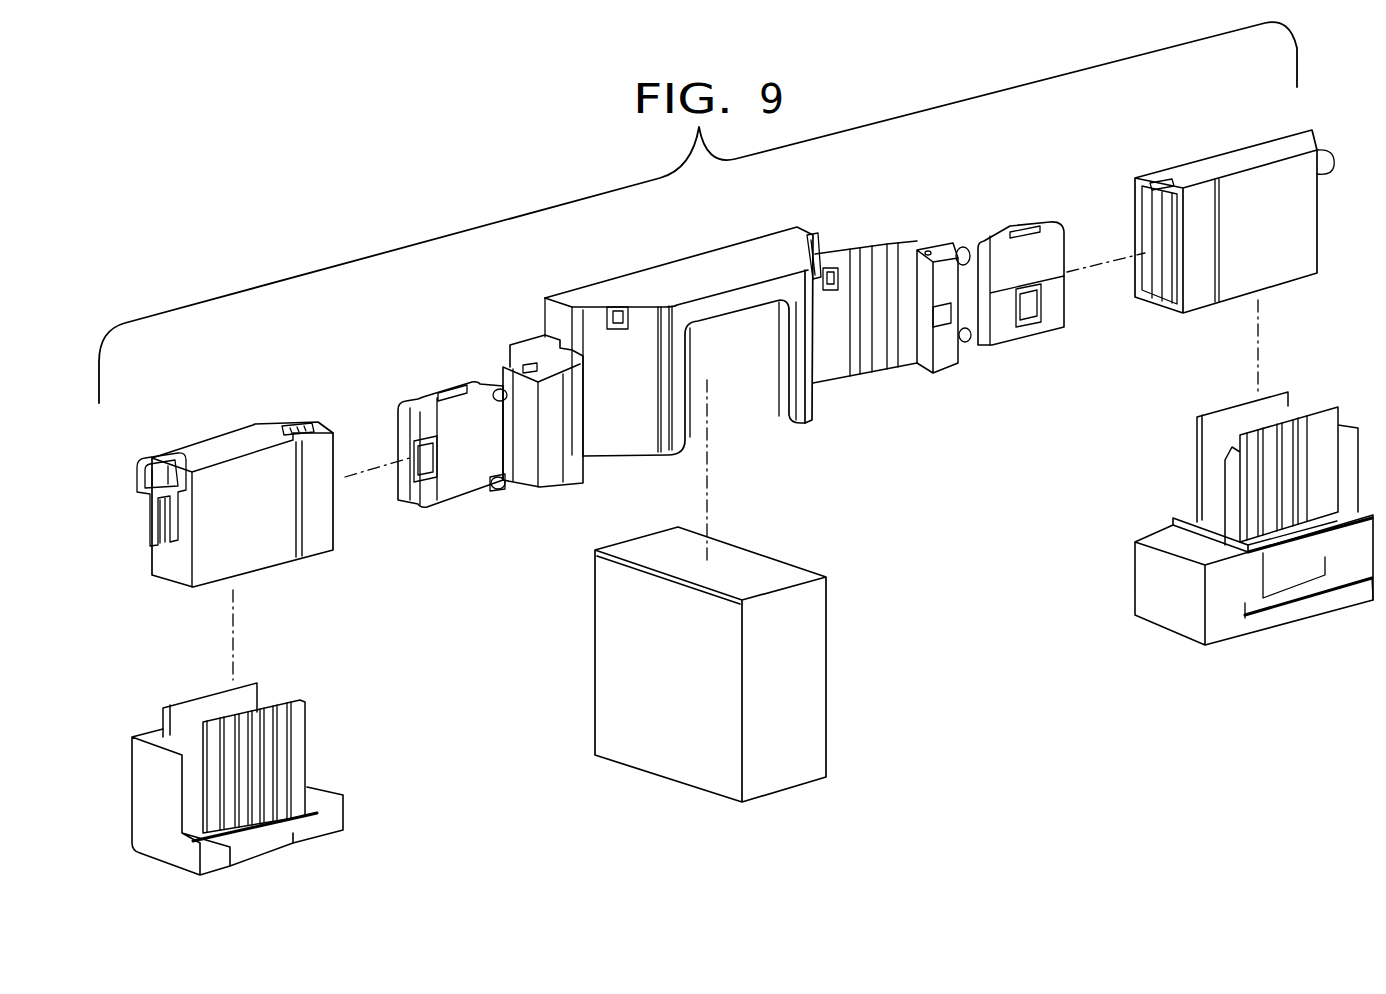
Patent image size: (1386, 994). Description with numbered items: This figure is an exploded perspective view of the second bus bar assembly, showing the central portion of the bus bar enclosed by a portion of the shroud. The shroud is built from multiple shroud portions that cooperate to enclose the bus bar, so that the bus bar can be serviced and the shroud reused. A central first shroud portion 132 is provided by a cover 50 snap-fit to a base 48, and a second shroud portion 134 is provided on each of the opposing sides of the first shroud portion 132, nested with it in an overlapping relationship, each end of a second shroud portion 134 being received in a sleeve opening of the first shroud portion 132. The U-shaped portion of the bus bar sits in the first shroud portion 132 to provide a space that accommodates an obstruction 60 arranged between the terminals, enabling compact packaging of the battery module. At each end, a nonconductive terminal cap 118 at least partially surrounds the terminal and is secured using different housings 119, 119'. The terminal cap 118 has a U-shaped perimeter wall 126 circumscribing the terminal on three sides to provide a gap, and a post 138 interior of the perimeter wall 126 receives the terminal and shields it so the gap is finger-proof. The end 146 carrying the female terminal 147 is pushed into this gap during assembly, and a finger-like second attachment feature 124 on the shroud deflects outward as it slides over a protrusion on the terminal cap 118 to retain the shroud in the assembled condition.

The base 48 is at (633, 415).
The cover 50 is at (686, 274).
The obstruction 60 is at (690, 763).
The terminal cap 118 is at (240, 810).
The housing 119 is at (258, 829).
The housing 119' is at (1254, 620).
The second attachment feature 124 is at (155, 500).
The perimeter wall 126 is at (757, 628).
The first shroud portion 132 is at (830, 226).
The second shroud portion 134 is at (243, 487).
The post 138 is at (1235, 475).
The end 146 is at (412, 437).
The female terminal 147 is at (450, 482).